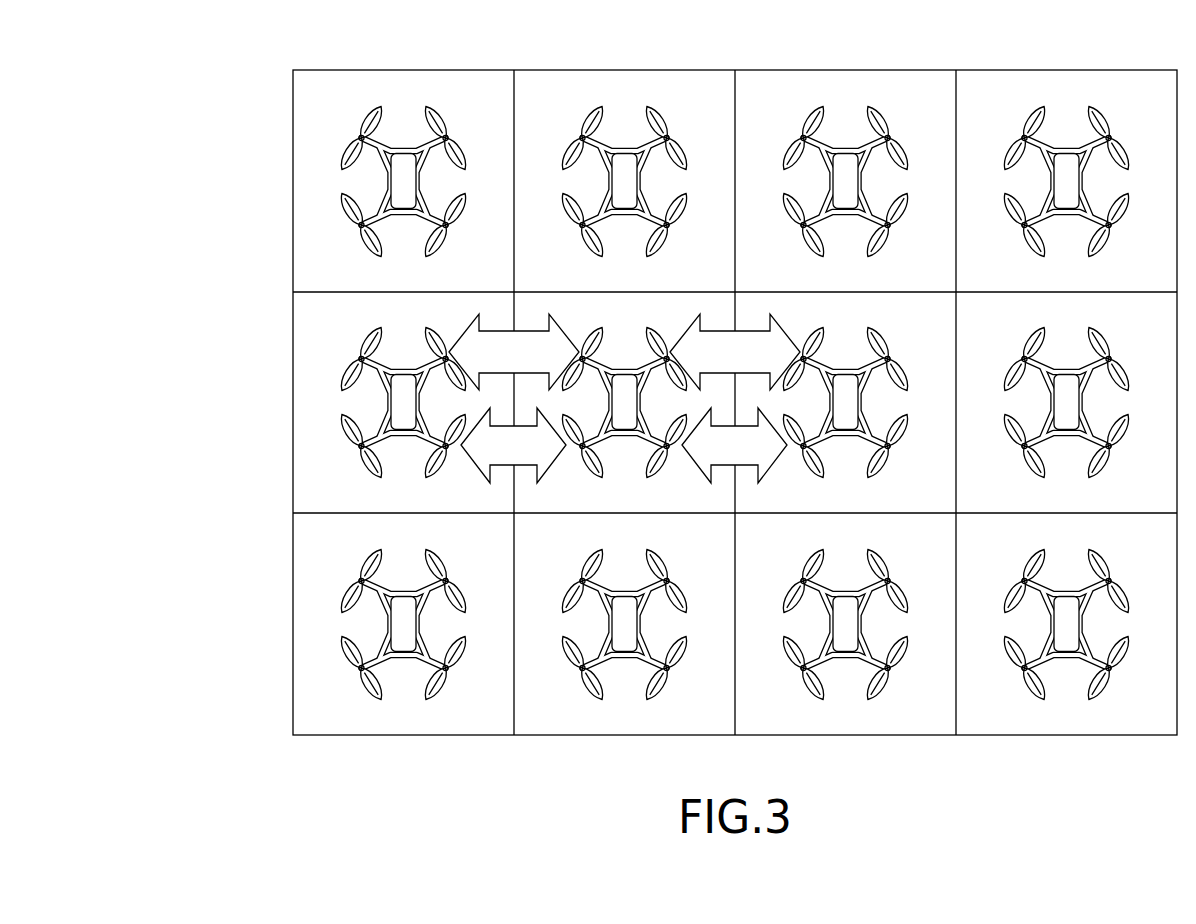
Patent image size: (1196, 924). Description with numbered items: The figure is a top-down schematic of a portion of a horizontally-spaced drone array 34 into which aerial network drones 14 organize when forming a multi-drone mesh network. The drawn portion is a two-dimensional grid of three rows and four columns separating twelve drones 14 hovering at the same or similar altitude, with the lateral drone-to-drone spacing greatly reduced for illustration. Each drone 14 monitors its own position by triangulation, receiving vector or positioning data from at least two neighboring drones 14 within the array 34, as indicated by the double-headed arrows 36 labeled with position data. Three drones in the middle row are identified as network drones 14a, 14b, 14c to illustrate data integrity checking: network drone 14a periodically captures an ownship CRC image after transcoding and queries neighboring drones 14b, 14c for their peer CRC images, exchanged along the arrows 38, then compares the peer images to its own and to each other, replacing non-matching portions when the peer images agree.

The horizontally-spaced drone array 34 is at (206, 66).
The aerial network drone 14 is at (743, 392).
The network drone 14a is at (652, 337).
The network drone 14b is at (363, 347).
The network drone 14c is at (880, 337).
The double-headed arrows 36 is at (468, 326).
The CRC exchange arrows 38 is at (547, 470).